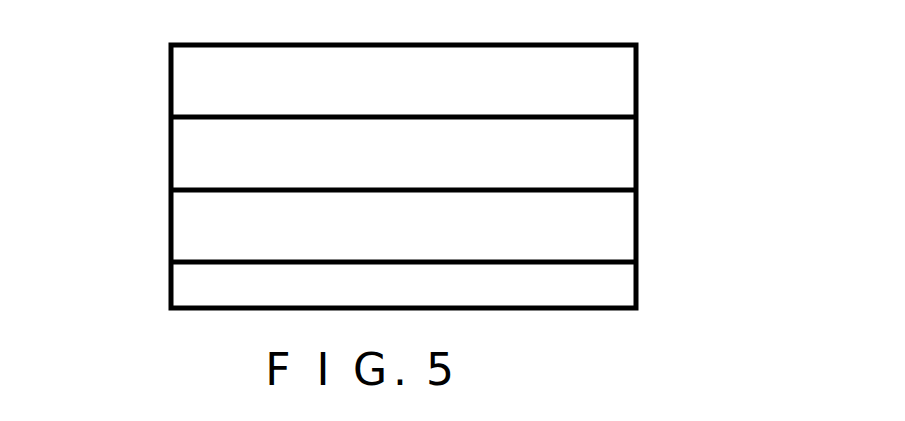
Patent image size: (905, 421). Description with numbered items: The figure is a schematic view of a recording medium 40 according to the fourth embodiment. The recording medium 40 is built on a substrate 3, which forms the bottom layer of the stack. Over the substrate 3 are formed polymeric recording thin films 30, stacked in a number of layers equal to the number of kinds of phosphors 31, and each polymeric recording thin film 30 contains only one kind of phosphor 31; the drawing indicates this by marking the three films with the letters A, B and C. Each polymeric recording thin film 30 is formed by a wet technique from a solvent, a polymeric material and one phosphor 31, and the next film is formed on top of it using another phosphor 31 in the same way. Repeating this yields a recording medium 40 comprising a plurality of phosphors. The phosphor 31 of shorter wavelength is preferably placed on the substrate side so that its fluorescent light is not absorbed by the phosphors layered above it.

The substrate 3 is at (548, 287).
The polymeric recording thin film 30 is at (183, 207).
The phosphor 31 is at (205, 77).
The recording medium 40 is at (646, 52).